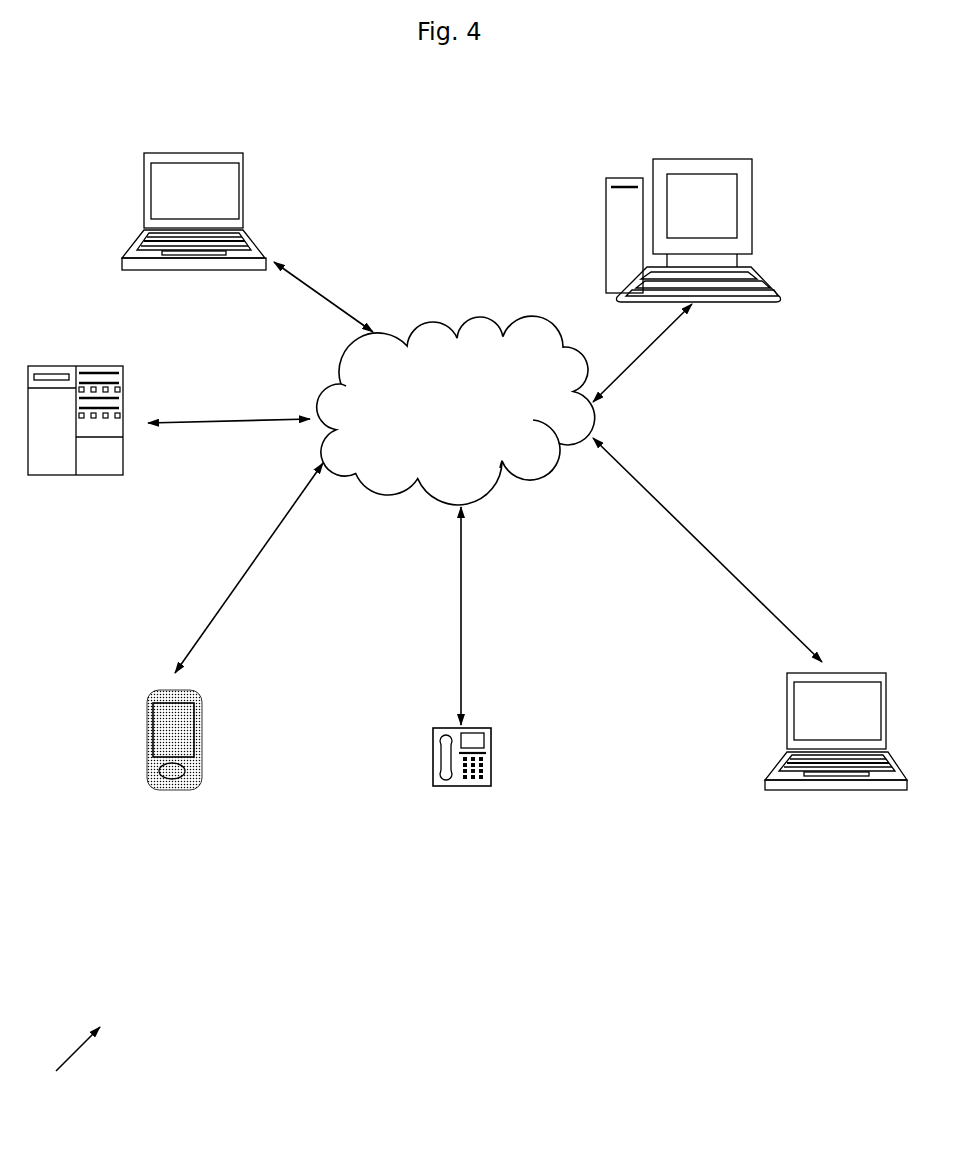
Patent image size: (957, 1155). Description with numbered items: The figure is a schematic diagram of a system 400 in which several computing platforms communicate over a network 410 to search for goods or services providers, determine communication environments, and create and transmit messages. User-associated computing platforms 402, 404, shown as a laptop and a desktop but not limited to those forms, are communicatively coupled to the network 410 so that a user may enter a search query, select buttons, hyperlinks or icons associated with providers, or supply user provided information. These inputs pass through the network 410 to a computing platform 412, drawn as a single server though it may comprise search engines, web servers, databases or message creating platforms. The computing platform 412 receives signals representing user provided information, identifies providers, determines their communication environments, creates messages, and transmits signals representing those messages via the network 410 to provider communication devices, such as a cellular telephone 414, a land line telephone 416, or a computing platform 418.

The system 400 is at (70, 1070).
The computing platform 402 is at (215, 148).
The computing platform 404 is at (678, 149).
The network 410 is at (456, 410).
The computing platform 412 is at (111, 365).
The cellular telephone 414 is at (207, 707).
The land line telephone 416 is at (493, 760).
The computing platform 418 is at (787, 680).